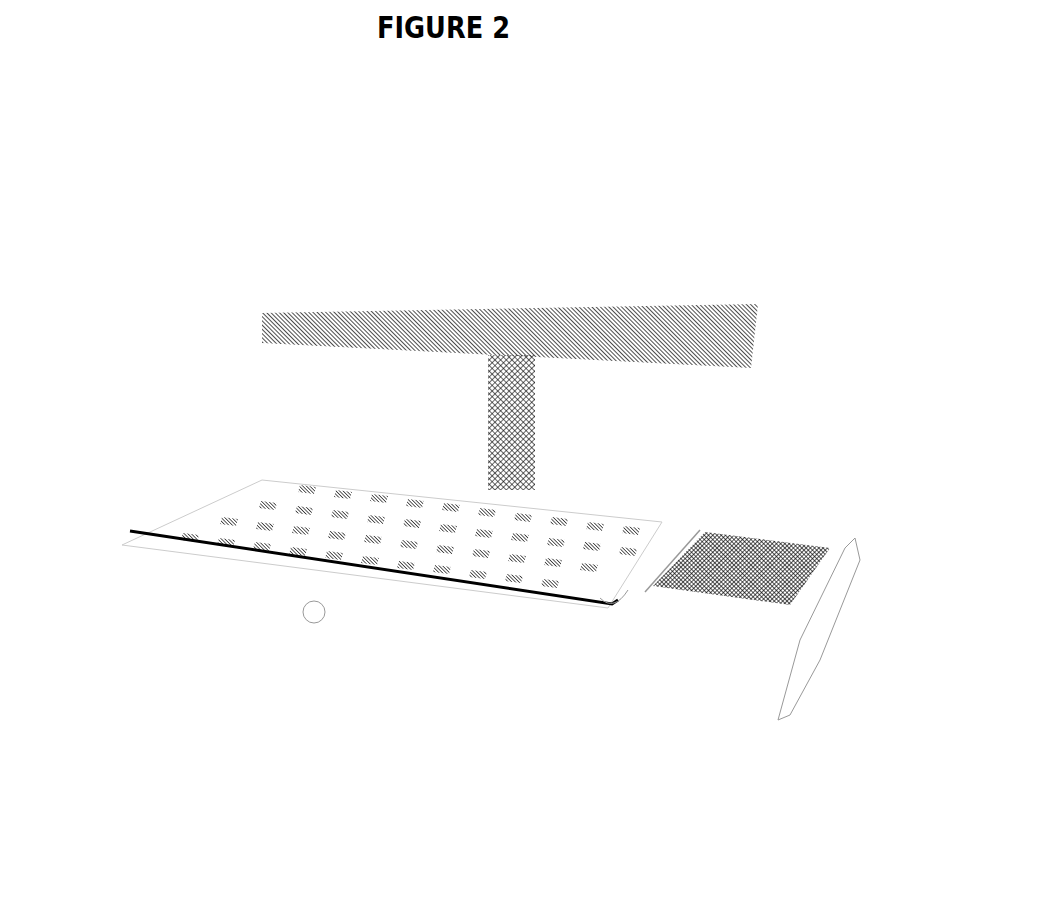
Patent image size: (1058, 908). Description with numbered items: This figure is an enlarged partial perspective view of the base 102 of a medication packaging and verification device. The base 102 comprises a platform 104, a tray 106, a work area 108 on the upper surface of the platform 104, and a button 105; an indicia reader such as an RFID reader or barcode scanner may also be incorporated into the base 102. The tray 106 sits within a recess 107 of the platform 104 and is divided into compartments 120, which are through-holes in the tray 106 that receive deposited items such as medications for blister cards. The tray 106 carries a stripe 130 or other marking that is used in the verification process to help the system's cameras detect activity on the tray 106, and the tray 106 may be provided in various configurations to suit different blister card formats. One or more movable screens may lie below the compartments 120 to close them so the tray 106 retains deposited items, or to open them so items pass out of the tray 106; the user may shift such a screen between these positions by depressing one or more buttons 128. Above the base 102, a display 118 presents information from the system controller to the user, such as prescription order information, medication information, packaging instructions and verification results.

The base 102 is at (172, 473).
The platform 104 is at (121, 582).
The button 105 is at (316, 618).
The tray 106 is at (626, 580).
The recess 107 is at (707, 530).
The work area 108 is at (785, 553).
The display 118 is at (758, 329).
The compartments 120 is at (491, 560).
The buttons 128 is at (805, 665).
The stripe 130 is at (140, 532).